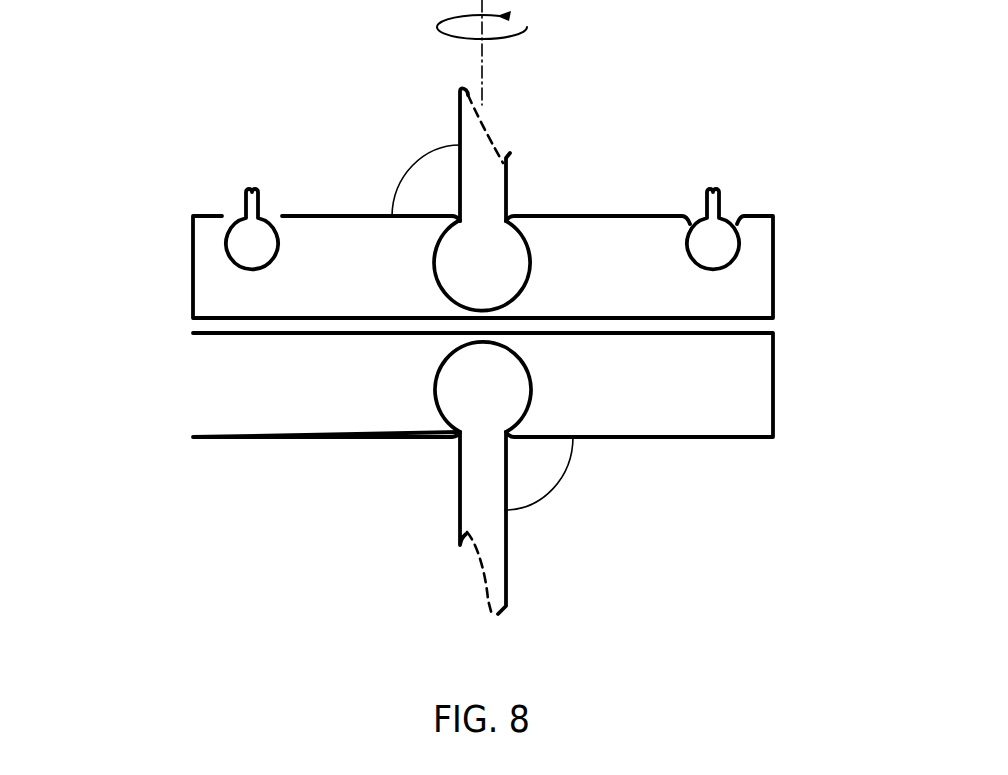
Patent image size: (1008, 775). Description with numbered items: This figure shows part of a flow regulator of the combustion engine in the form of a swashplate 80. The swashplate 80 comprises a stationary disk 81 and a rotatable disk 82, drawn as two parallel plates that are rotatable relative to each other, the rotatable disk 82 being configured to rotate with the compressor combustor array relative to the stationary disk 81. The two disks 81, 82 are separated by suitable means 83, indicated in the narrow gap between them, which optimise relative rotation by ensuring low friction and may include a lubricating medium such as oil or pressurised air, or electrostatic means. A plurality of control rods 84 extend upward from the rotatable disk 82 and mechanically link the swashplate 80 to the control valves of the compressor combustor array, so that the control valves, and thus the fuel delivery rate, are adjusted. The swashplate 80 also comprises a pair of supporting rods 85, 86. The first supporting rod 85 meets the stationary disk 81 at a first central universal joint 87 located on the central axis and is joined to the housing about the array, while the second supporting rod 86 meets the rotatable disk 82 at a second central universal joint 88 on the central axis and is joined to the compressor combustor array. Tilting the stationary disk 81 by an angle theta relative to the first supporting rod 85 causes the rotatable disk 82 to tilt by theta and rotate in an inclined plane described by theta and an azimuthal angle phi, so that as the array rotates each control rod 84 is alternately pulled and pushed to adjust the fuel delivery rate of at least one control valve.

The swashplate 80 is at (130, 514).
The stationary disk 81 is at (205, 377).
The rotatable disk 82 is at (193, 245).
The suitable means 83 is at (790, 327).
The control rods 84 is at (245, 238).
The first supporting rod 85 is at (480, 487).
The second supporting rod 86 is at (490, 178).
The first central universal joint 87 is at (434, 388).
The second central universal joint 88 is at (531, 255).